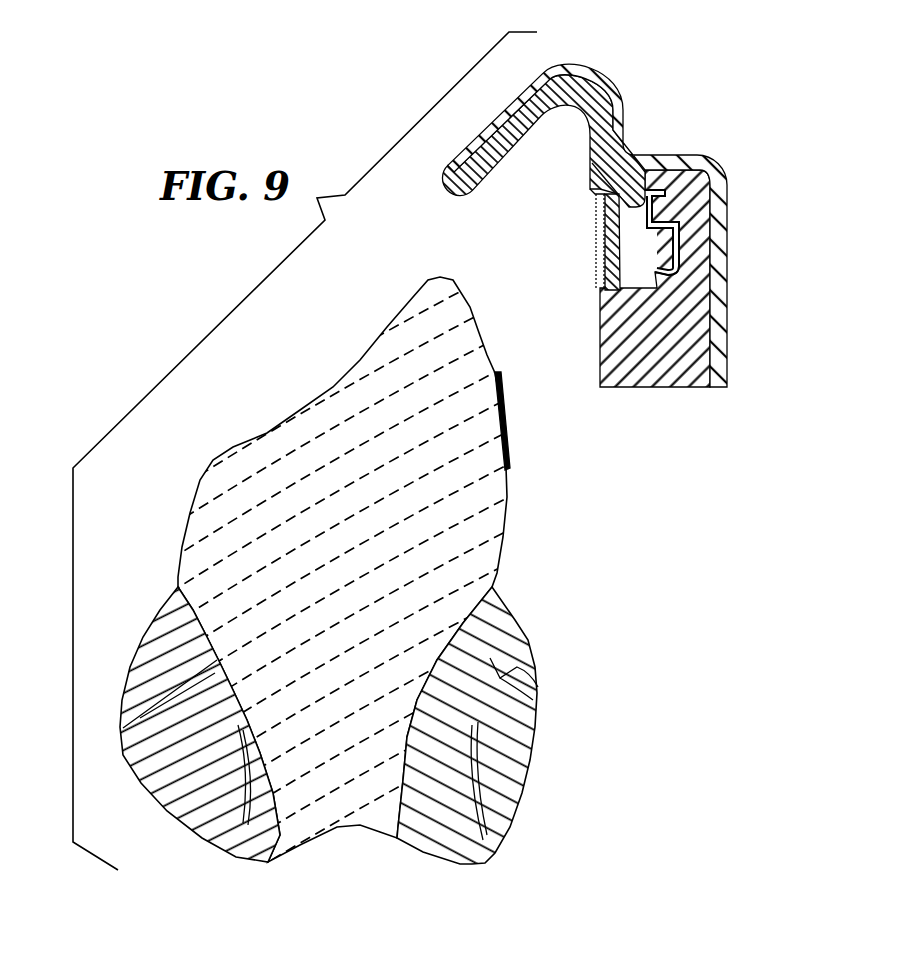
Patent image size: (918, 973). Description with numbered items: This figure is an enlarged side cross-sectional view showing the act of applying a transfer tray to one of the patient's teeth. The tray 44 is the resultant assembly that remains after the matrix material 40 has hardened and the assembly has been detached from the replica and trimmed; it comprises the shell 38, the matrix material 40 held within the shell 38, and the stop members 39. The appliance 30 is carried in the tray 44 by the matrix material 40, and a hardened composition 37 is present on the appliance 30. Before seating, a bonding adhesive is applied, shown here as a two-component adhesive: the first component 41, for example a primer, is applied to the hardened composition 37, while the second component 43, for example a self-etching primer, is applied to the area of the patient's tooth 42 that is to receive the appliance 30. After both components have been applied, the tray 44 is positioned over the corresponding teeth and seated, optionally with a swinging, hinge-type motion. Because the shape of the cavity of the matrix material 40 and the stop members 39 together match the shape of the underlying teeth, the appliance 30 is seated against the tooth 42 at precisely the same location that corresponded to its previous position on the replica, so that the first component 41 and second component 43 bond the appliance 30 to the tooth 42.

The appliance 30 is at (653, 208).
The hardened composition 37 is at (596, 242).
The shell 38 is at (717, 342).
The stop member 39 is at (567, 84).
The matrix material 40 is at (703, 298).
The first component 41 is at (597, 219).
The patient's tooth 42 is at (387, 355).
The second component 43 is at (509, 415).
The tray 44 is at (552, 193).